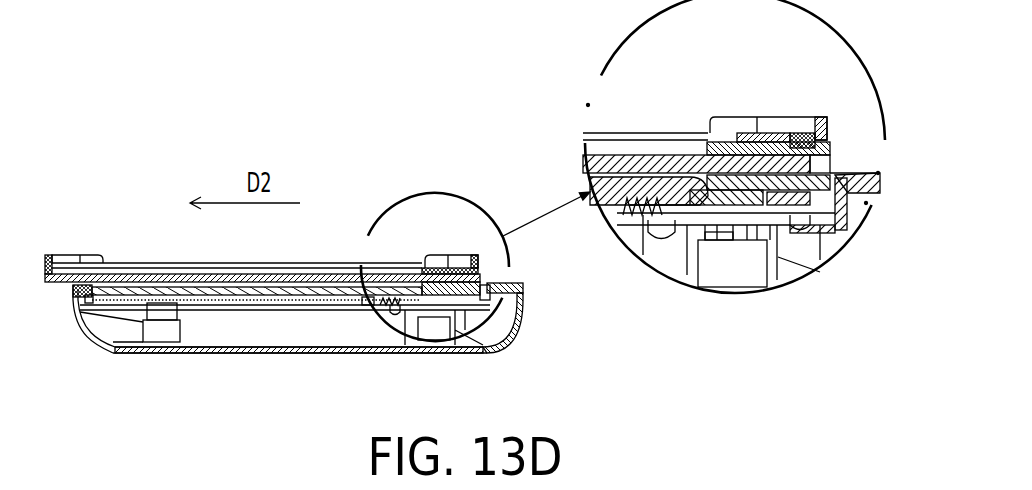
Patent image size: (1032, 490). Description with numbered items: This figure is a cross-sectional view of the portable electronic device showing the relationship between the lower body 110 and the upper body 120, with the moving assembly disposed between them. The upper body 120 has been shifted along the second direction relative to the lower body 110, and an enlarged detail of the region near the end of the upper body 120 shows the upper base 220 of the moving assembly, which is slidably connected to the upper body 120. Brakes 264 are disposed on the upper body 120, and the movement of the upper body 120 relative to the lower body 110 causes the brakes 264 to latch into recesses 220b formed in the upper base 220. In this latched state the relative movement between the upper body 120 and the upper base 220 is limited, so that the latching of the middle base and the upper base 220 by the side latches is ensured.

The lower body 110 is at (140, 355).
The upper body 120 is at (138, 270).
The upper base 220 is at (720, 145).
The recesses 220b is at (796, 137).
The brakes 264 is at (800, 138).